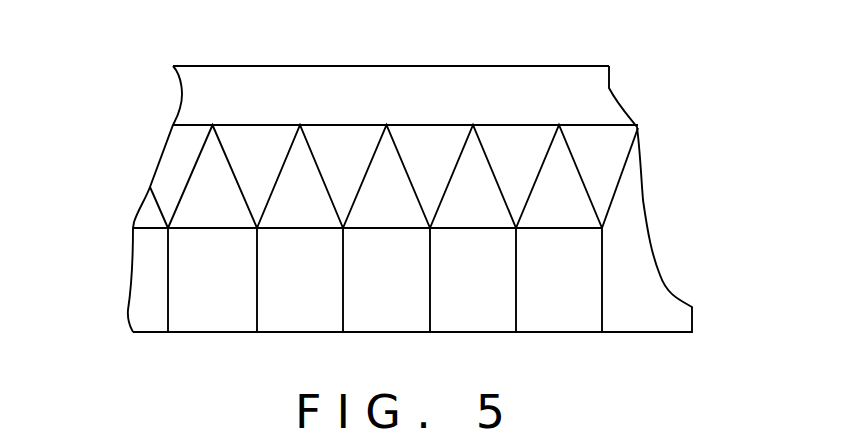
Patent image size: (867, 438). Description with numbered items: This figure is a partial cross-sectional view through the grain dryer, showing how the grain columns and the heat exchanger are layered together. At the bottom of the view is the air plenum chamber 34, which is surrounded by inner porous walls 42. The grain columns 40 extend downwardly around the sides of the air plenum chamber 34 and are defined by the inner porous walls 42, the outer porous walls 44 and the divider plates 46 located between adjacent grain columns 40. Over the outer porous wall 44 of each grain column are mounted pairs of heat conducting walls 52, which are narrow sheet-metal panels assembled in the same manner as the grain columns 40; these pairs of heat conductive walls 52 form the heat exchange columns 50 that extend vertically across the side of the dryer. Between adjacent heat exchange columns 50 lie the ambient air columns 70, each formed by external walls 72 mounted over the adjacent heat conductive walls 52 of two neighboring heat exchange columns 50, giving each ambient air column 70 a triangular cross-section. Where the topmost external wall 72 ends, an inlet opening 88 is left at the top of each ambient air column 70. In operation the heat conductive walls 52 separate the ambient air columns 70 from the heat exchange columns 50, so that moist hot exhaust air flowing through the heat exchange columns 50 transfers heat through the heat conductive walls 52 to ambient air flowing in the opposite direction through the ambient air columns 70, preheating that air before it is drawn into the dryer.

The inlet opening 88 is at (391, 84).
The external wall 72 is at (247, 125).
The heat conductive wall 52 is at (224, 150).
The ambient air column 70 is at (613, 163).
The heat exchange column 50 is at (570, 214).
The outer porous wall 44 is at (188, 229).
The divider plate 46 is at (167, 298).
The grain column 40 is at (571, 291).
The inner porous wall 42 is at (228, 333).
The air plenum chamber 34 is at (404, 369).